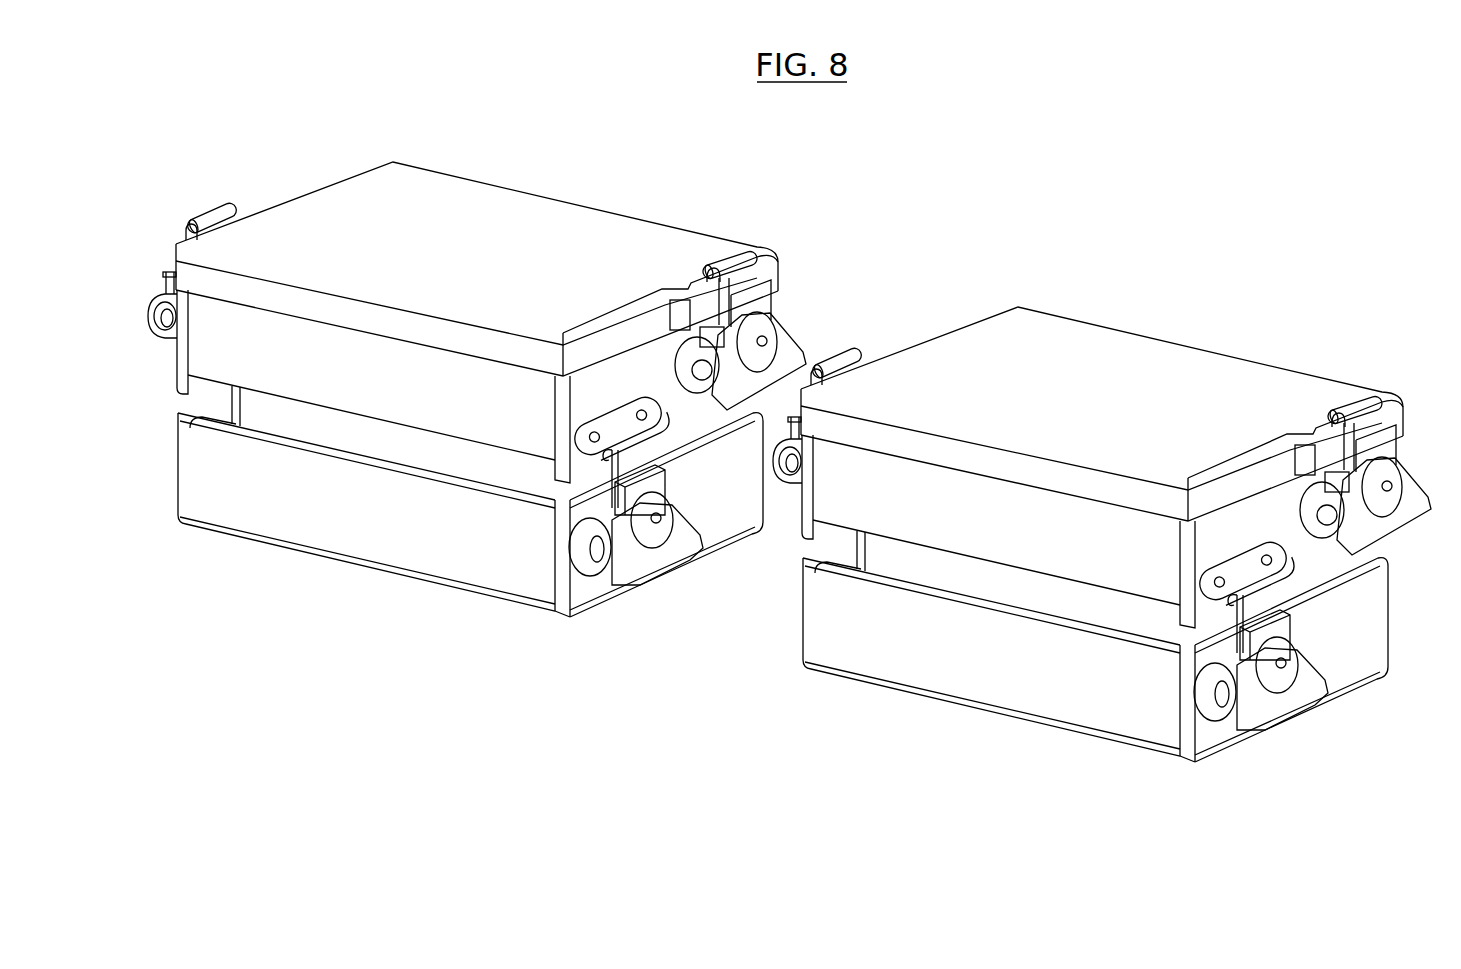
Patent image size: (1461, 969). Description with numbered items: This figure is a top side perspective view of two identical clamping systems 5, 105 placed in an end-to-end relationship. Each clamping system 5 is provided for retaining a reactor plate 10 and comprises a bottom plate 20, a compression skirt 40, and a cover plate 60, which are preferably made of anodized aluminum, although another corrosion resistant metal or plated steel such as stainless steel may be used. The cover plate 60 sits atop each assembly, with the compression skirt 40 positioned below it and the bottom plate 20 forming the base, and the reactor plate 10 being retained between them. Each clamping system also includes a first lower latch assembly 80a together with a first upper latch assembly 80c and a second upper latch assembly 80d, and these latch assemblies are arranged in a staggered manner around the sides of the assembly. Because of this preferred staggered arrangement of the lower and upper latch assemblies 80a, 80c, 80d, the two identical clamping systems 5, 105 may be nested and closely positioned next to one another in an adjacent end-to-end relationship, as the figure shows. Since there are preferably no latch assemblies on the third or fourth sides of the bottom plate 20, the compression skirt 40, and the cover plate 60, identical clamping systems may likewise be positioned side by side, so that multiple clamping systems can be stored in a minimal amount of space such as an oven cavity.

The clamping system 5 is at (394, 150).
The clamping system 105 is at (1019, 295).
The reactor plate 10 is at (487, 473).
The bottom plate 20 is at (373, 550).
The compression skirt 40 is at (627, 370).
The cover plate 60 is at (525, 200).
The first lower latch assembly 80a is at (624, 563).
The first upper latch assembly 80c is at (793, 356).
The second upper latch assembly 80d is at (149, 313).